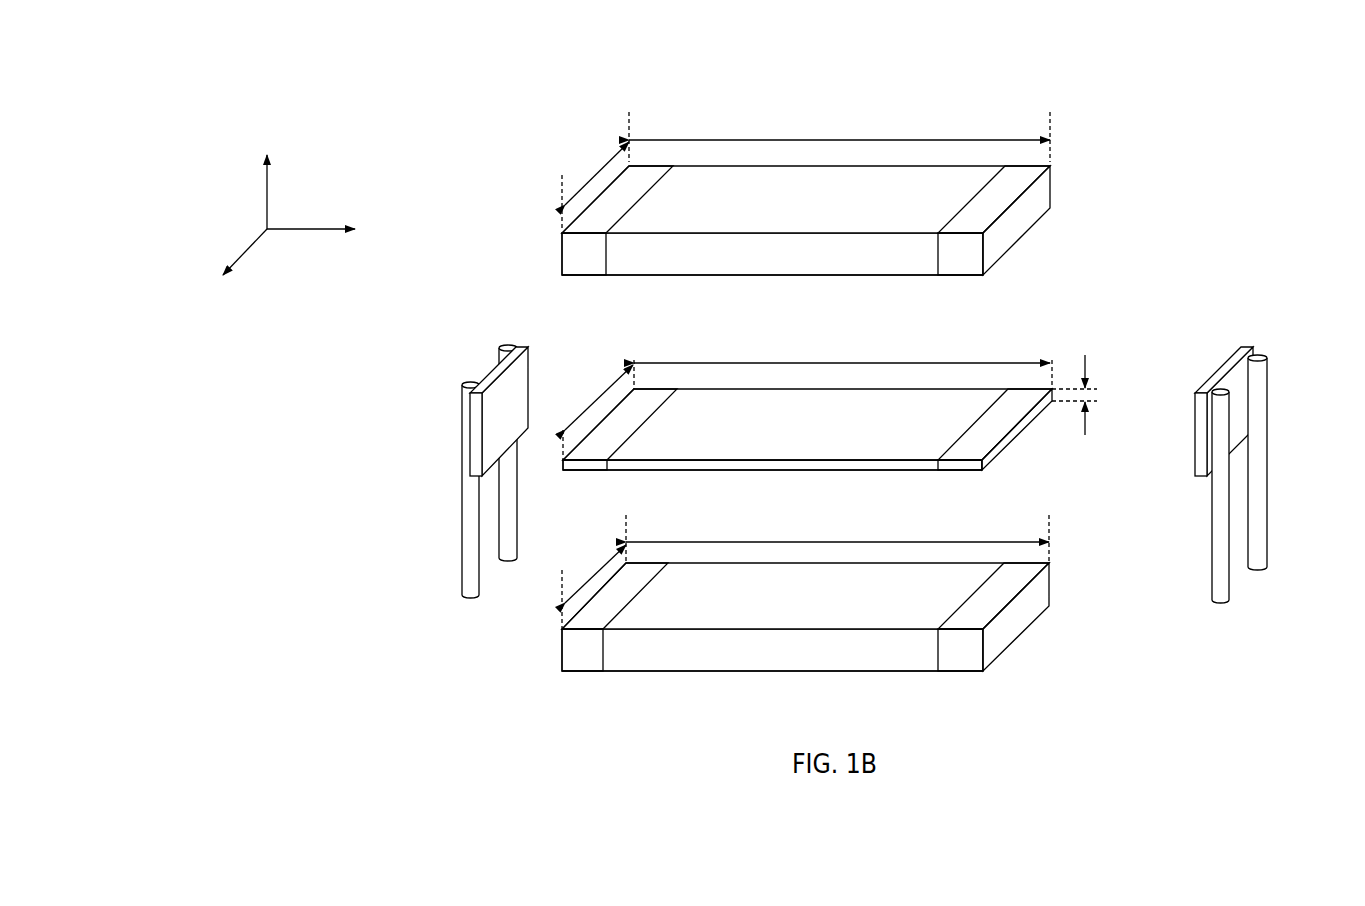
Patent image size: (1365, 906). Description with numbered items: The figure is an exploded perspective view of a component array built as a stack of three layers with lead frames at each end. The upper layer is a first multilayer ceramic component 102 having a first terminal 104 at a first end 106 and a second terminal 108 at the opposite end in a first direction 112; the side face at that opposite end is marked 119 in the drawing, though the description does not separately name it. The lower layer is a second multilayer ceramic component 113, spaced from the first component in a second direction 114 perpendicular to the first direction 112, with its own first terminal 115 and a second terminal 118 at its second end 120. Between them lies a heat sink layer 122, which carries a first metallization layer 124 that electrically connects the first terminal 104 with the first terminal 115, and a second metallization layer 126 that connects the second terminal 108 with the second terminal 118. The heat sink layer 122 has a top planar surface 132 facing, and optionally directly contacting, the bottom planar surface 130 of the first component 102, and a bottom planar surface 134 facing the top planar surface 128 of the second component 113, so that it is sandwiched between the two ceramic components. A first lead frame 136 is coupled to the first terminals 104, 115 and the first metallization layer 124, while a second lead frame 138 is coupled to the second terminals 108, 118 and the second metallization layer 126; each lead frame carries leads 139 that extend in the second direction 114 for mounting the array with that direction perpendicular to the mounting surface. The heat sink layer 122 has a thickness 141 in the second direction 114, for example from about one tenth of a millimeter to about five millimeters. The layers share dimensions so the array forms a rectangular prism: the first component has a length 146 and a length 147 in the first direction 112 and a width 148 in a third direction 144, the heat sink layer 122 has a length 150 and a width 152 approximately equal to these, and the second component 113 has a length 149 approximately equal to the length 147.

The first multilayer ceramic component 102 is at (833, 163).
The first terminal 104 is at (653, 165).
The first end 106 is at (562, 242).
The second terminal 108 is at (1011, 165).
The first direction 112 is at (339, 233).
The second multilayer ceramic component 113 is at (731, 673).
The second direction 114 is at (264, 176).
The first terminal 115 is at (585, 673).
The second terminal 118 is at (971, 672).
The side face of upper layer 119 is at (1050, 166).
The second end 120 is at (1025, 627).
The heat sink layer 122 is at (844, 408).
The first metallization layer 124 is at (650, 402).
The second metallization layer 126 is at (998, 450).
The top planar surface 128 is at (788, 611).
The bottom planar surface 130 is at (810, 286).
The top planar surface 132 is at (811, 440).
The bottom planar surface 134 is at (782, 475).
The first lead frame 136 is at (462, 383).
The second lead frame 138 is at (1265, 388).
The leads 139 is at (462, 538).
The thickness 141 is at (1088, 373).
The third direction 144 is at (226, 272).
The length 146 is at (839, 101).
The length 147 is at (873, 140).
The width 148 is at (608, 160).
The length 149 is at (855, 542).
The length 150 is at (1023, 360).
The width 152 is at (595, 400).